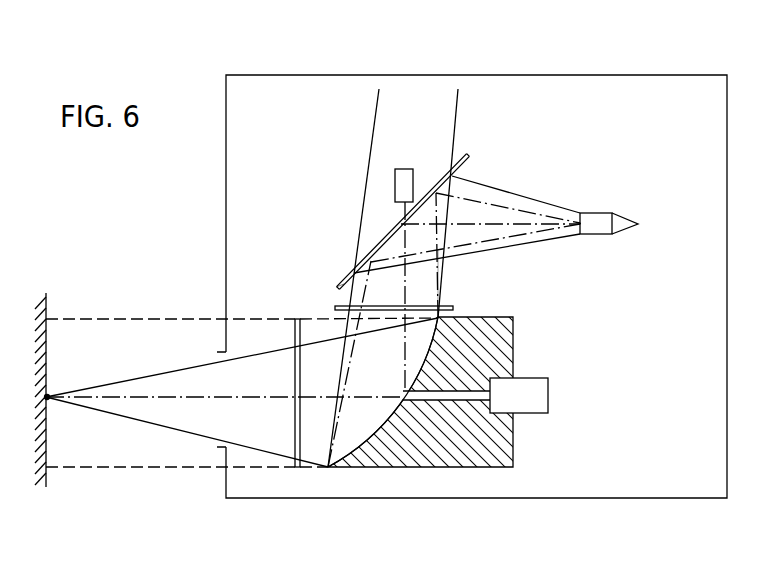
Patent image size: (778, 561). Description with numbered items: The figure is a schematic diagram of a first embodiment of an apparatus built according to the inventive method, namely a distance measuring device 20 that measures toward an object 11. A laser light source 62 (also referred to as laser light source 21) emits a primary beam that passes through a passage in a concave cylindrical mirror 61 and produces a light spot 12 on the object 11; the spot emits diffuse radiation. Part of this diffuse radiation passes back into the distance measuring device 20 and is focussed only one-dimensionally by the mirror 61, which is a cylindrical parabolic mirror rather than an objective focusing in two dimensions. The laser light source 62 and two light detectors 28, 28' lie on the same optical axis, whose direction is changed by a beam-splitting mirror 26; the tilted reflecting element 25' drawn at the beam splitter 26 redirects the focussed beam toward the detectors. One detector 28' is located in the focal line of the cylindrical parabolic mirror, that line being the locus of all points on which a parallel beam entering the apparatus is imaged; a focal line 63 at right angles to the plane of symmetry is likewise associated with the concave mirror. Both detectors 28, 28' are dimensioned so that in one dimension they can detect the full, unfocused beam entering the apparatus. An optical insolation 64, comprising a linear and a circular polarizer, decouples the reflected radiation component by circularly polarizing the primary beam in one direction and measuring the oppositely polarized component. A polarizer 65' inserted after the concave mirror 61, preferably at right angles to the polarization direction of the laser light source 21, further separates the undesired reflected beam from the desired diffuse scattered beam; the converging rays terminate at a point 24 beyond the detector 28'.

The distance measuring device 20 is at (220, 206).
The object 11 is at (40, 304).
The light spot 12 is at (50, 394).
The optical insolation 64 is at (296, 371).
The concave cylindrical mirror 61 is at (503, 341).
The laser light source 62 is at (404, 396).
The laser light source 21 is at (546, 398).
The polarizer 65' is at (427, 298).
The mirror 25' is at (426, 211).
The beam-splitting mirror 26 is at (355, 277).
The light detector 28 is at (404, 161).
The light detector 28' is at (603, 199).
The focal point 24 is at (640, 227).
The focal line 63 is at (576, 235).